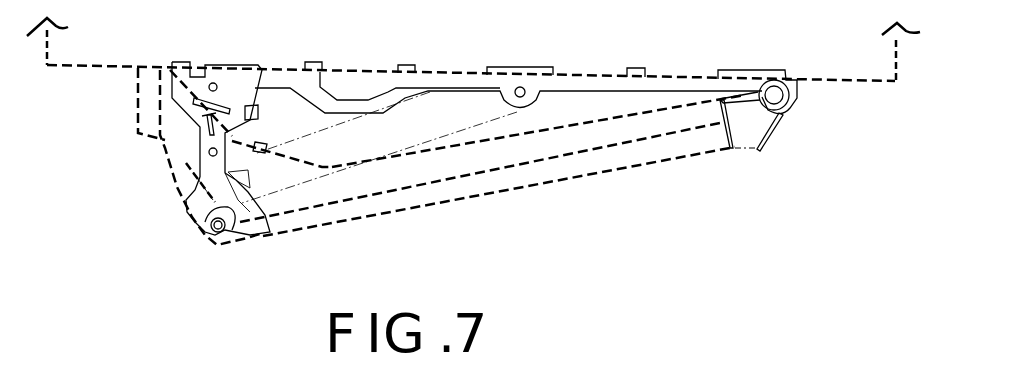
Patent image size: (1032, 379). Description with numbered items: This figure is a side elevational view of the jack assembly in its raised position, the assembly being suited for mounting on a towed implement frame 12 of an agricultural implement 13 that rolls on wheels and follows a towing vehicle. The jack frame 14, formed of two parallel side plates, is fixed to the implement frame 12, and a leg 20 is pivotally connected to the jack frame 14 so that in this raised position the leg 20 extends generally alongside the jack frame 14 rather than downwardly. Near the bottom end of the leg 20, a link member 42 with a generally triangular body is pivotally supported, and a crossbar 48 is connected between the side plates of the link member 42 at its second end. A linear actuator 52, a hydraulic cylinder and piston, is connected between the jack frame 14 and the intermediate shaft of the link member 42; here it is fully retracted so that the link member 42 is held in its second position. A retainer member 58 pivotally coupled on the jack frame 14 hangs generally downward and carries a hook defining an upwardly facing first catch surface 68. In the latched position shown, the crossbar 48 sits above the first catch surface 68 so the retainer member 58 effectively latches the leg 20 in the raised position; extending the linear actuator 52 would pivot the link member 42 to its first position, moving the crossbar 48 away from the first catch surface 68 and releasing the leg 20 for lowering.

The towed implement frame 12 is at (838, 82).
The agricultural implement 13 is at (907, 78).
The jack frame 14 is at (452, 75).
The leg 20 is at (567, 186).
The link member 42 is at (258, 228).
The crossbar 48 is at (160, 193).
The linear actuator 52 is at (418, 123).
The retainer member 58 is at (237, 88).
The first catch surface 68 is at (190, 170).